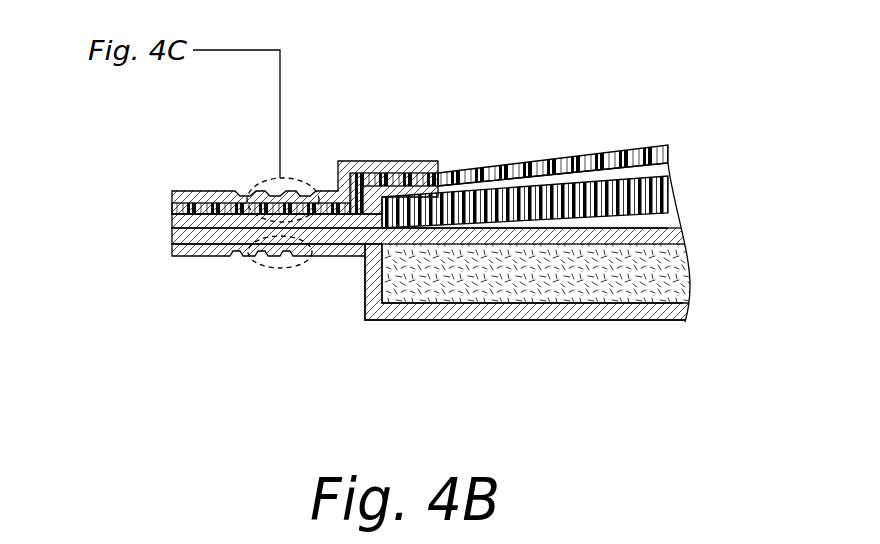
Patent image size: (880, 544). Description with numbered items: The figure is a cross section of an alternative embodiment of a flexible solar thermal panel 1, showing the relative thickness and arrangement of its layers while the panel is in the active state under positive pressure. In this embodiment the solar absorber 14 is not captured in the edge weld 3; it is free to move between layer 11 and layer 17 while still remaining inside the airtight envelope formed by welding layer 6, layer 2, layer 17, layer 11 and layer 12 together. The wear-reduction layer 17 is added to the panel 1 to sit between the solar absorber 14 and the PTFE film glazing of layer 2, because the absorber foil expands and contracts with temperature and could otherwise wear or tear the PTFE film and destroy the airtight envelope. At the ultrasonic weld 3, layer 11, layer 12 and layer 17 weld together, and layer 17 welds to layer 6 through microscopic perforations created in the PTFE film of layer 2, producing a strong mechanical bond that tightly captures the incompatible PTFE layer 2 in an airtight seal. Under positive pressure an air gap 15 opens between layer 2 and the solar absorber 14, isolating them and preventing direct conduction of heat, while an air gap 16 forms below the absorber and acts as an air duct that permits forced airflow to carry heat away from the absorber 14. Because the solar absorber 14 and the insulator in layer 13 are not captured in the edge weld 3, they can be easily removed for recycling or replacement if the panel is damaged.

The panel 1 is at (414, 152).
The PTFE film glazing layer 2 is at (657, 140).
The edge weld 3 is at (276, 186).
The layer 6 is at (187, 197).
The layer 11 is at (172, 241).
The layer 12 is at (213, 252).
The insulator layer 13 is at (400, 288).
The solar absorber 14 is at (667, 185).
The air gap 15 is at (660, 168).
The air gap 16 is at (664, 220).
The wear-reduction layer 17 is at (172, 221).